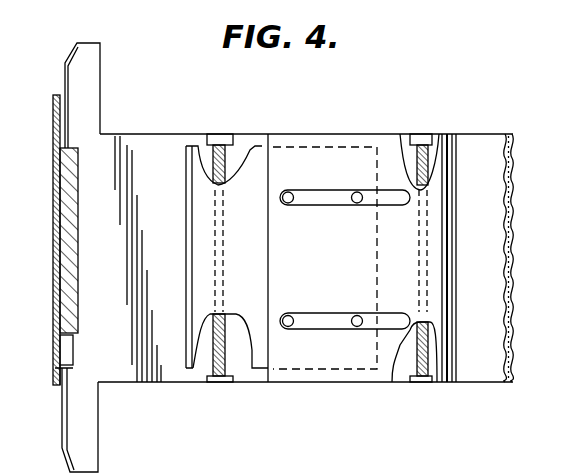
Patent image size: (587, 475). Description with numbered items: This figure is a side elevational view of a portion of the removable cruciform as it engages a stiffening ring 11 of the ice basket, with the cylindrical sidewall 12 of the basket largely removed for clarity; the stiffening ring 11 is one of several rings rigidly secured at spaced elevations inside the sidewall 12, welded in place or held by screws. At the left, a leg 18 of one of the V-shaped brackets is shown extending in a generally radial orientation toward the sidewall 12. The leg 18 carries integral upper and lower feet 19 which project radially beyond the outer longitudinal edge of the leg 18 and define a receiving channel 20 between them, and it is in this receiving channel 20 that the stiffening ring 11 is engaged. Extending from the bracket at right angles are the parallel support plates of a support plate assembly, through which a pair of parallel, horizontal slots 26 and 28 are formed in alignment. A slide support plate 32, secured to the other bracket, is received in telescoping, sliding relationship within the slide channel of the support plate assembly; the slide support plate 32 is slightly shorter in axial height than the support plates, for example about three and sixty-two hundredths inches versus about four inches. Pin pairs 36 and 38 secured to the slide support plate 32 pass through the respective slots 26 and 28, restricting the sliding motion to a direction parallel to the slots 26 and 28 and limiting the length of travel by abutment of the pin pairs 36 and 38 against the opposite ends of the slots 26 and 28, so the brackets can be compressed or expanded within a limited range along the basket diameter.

The stiffening ring 11 is at (78, 240).
The cylindrical sidewall 12 is at (53, 108).
The leg 18 is at (150, 134).
The foot 19 is at (98, 83).
The receiving channel 20 is at (75, 352).
The horizontal slot 26 is at (396, 185).
The horizontal slot 28 is at (393, 345).
The slide support plate 32 is at (258, 155).
The pin pair 36 is at (356, 191).
The pin pair 38 is at (357, 328).